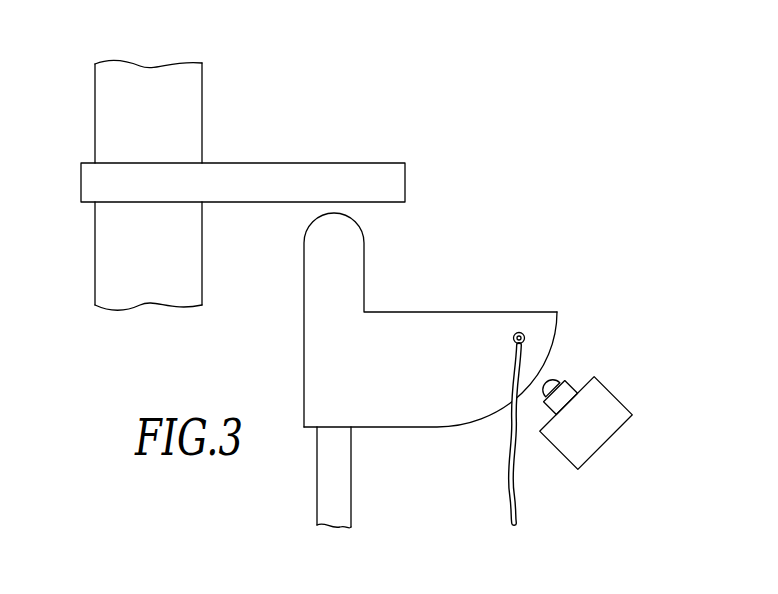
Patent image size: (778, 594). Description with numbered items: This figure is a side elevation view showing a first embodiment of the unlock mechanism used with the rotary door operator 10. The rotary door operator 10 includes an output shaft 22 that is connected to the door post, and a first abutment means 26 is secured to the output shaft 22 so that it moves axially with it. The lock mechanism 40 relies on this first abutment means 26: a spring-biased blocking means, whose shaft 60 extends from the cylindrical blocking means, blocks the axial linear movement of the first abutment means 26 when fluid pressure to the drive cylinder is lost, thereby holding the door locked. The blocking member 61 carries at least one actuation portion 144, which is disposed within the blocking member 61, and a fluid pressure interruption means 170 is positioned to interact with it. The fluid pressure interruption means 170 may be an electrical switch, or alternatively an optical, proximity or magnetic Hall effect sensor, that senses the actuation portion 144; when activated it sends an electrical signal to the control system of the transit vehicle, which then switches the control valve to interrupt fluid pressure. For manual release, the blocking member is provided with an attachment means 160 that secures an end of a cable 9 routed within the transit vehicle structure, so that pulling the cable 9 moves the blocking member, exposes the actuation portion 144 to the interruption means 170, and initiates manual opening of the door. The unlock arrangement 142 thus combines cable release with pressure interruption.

The rotary door operator 10 is at (298, 62).
The output shaft 22 is at (98, 107).
The first abutment means 26 is at (305, 163).
The lock mechanism 40 is at (506, 125).
The blocking member 61 is at (353, 282).
The actuation portion 144 is at (550, 350).
The sensor assembly 142 is at (625, 285).
The shaft 60 is at (323, 486).
The cable 9 is at (509, 466).
The attachment means 160 is at (513, 338).
The fluid pressure interruption means 170 is at (616, 438).